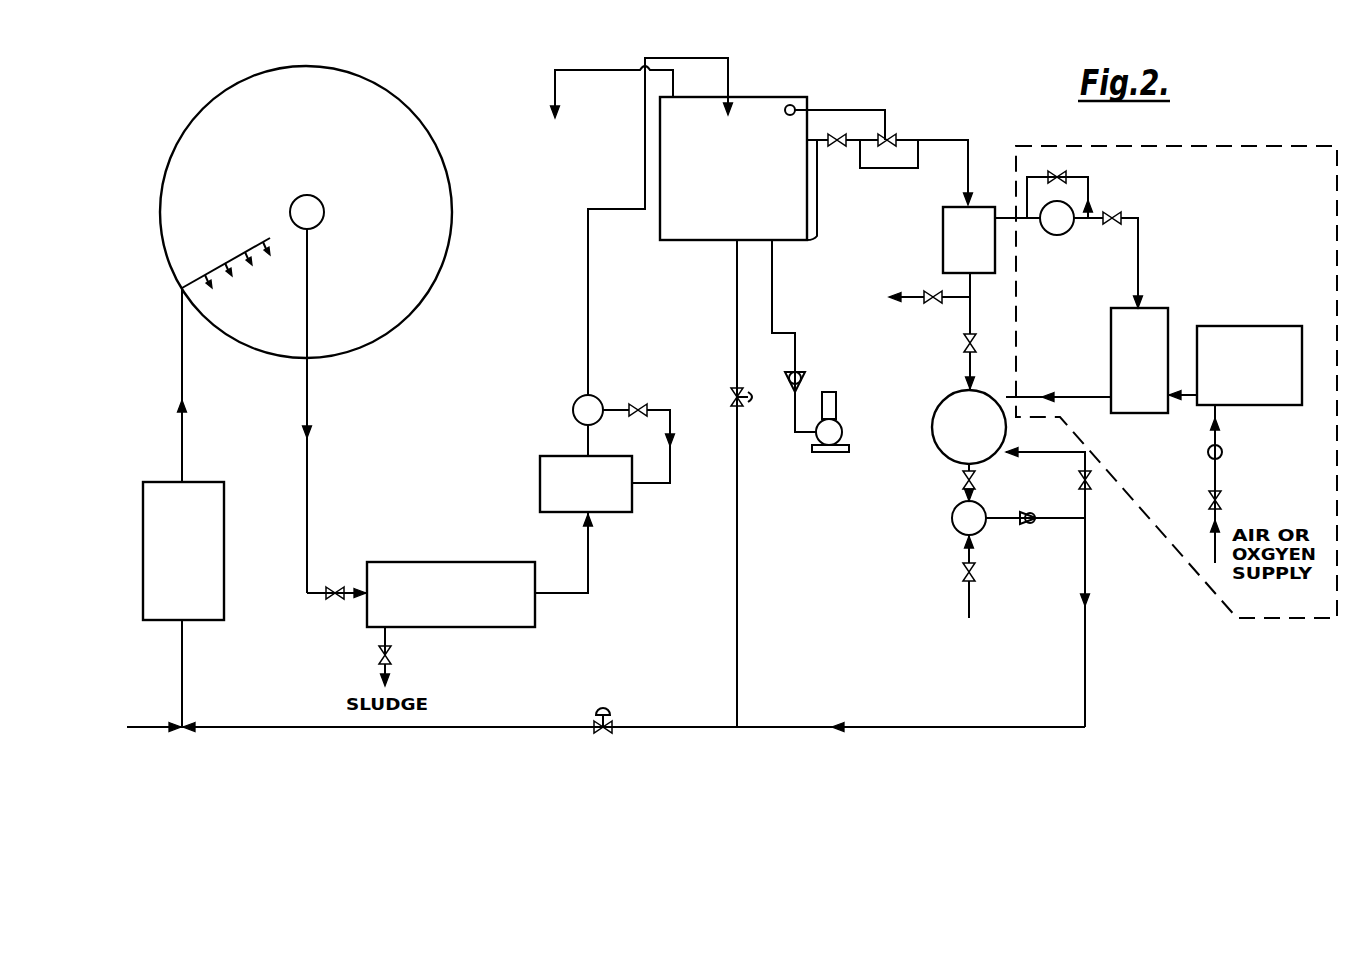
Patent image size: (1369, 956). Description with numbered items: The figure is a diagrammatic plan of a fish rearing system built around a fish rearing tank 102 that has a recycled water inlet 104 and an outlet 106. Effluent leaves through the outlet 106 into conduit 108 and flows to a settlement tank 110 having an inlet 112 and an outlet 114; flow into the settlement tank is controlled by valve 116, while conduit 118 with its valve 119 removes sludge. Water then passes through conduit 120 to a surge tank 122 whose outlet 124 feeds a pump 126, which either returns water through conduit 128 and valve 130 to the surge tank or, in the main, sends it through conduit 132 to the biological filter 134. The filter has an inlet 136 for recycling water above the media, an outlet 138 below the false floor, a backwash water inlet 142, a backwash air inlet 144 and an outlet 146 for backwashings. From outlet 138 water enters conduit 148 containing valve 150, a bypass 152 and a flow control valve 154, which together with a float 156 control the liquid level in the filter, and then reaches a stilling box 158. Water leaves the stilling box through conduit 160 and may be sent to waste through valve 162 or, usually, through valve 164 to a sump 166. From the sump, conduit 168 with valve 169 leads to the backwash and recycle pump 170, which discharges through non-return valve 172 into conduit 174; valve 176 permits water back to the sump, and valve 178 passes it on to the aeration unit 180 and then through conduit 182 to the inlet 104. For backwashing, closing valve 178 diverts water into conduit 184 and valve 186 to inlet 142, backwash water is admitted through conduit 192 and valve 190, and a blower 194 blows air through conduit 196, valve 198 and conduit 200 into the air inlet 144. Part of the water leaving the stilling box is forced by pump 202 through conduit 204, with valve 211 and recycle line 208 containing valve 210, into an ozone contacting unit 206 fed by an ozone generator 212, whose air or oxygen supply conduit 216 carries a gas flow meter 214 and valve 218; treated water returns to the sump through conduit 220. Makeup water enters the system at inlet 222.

The fish rearing tank 102 is at (382, 104).
The recycled water inlet 104 is at (246, 250).
The outlet 106 is at (313, 216).
The conduit 108 is at (310, 403).
The settlement tank 110 is at (456, 562).
The inlet 112 is at (358, 590).
The outlet 114 is at (540, 591).
The valve 116 is at (332, 600).
The conduit 118 is at (375, 640).
The valve 119 is at (393, 660).
The conduit 120 is at (590, 576).
The surge tank 122 is at (612, 512).
The outlet 124 is at (582, 453).
The pump 126 is at (576, 398).
The conduit 128 is at (672, 462).
The valve 130 is at (643, 404).
The conduit 132 is at (590, 322).
The biological filter 134 is at (690, 232).
The inlet 136 is at (736, 95).
The outlet 138 is at (815, 240).
The inlet 142 is at (737, 248).
The inlet 144 is at (774, 248).
The outlet 146 is at (677, 92).
The conduit 148 is at (836, 134).
The valve 150 is at (856, 138).
The bypass 152 is at (918, 166).
The flow control valve 154 is at (896, 137).
The float 156 is at (790, 104).
The stilling box 158 is at (977, 212).
The conduit 160 is at (972, 287).
The valve 162 is at (932, 290).
The valve 164 is at (962, 346).
The sump 166 is at (958, 395).
The conduit 168 is at (965, 470).
The valve 169 is at (961, 484).
The backwash and recycle pump 170 is at (961, 530).
The non-return valve 172 is at (1030, 527).
The conduit 174 is at (1088, 580).
The valve 176 is at (1078, 483).
The valve 178 is at (612, 723).
The aeration unit 180 is at (210, 610).
The conduit 182 is at (185, 437).
The conduit 184 is at (740, 640).
The valve 186 is at (733, 390).
The valve 190 is at (960, 576).
The conduit 192 is at (968, 606).
The blower 194 is at (841, 426).
The conduit 196 is at (790, 418).
The valve 198 is at (805, 378).
The conduit 200 is at (776, 315).
The pump 202 is at (1070, 226).
The conduit 204 is at (1000, 223).
The ozone contacting unit 206 is at (1152, 312).
The recycle line 208 is at (1092, 182).
The valve 210 is at (1068, 170).
The valve 211 is at (1125, 212).
The ozone generator 212 is at (1264, 405).
The gas flow meter 214 is at (1208, 456).
The conduit 216 is at (1218, 480).
The valve 218 is at (1222, 505).
The conduit 220 is at (1093, 397).
The inlet 222 is at (166, 725).